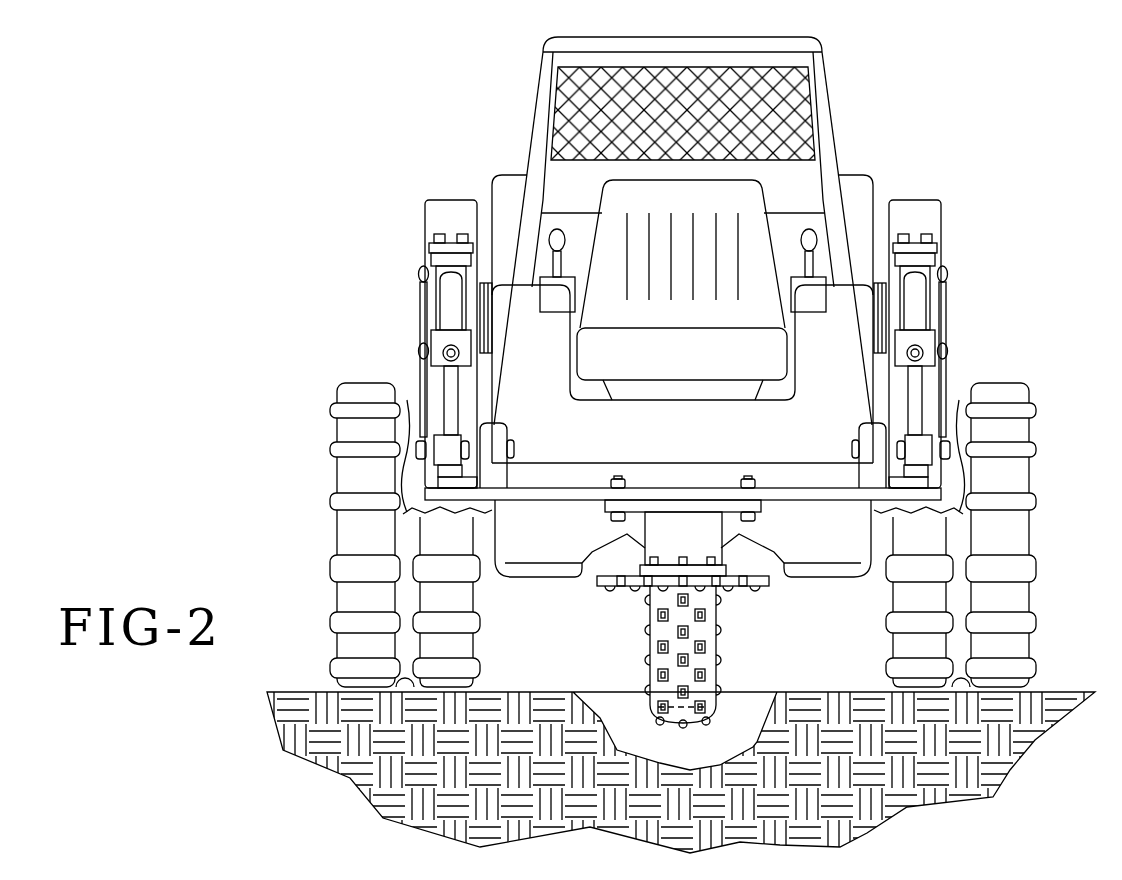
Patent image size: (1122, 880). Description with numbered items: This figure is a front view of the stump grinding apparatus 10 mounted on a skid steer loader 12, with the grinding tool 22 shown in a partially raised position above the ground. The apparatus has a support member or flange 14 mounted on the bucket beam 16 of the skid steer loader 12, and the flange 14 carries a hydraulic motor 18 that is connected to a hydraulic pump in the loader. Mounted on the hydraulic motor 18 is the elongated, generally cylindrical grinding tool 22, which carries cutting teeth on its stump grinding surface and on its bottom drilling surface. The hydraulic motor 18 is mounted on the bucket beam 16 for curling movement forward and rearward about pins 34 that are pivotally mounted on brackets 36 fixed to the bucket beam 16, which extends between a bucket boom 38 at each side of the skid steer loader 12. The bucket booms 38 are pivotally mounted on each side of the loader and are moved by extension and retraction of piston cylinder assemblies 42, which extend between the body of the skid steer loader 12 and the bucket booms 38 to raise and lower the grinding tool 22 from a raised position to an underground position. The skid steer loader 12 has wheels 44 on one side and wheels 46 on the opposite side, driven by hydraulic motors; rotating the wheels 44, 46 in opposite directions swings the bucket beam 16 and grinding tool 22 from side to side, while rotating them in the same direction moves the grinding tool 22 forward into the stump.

The stump grinding apparatus 10 is at (612, 552).
The skid steer loader 12 is at (502, 103).
The support member or flange 14 is at (760, 506).
The bucket beam 16 is at (447, 496).
The hydraulic motor 18 is at (725, 548).
The grinding tool 22 is at (718, 630).
The pins 34 is at (418, 442).
The brackets 36 is at (437, 480).
The bucket boom 38 is at (437, 386).
The piston cylinder assemblies 42 is at (456, 312).
The wheels 44 is at (372, 602).
The wheels 46 is at (994, 602).